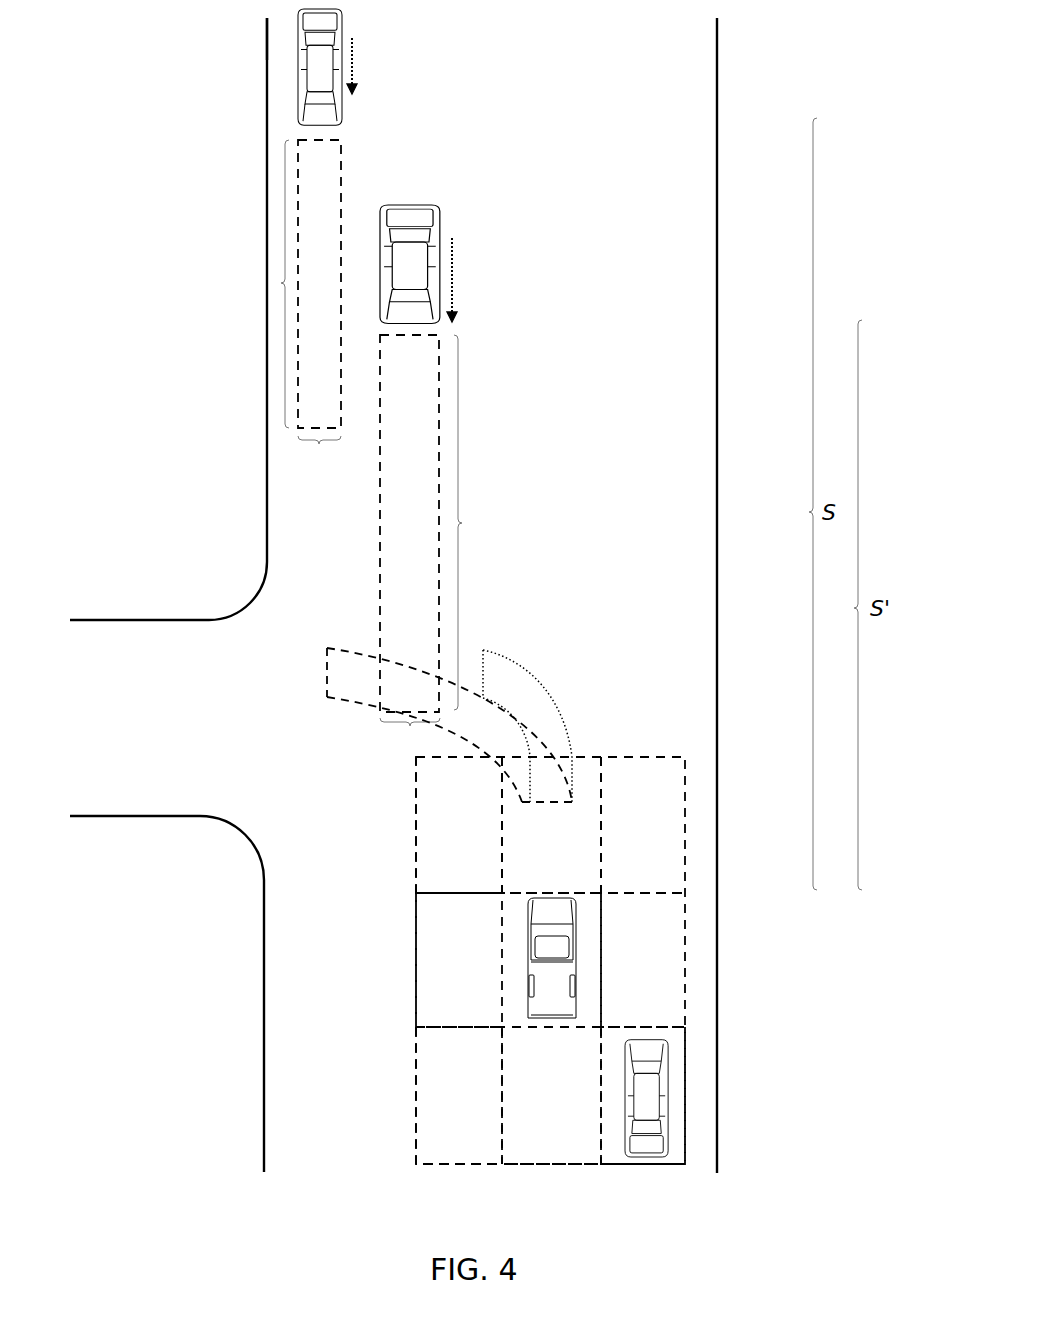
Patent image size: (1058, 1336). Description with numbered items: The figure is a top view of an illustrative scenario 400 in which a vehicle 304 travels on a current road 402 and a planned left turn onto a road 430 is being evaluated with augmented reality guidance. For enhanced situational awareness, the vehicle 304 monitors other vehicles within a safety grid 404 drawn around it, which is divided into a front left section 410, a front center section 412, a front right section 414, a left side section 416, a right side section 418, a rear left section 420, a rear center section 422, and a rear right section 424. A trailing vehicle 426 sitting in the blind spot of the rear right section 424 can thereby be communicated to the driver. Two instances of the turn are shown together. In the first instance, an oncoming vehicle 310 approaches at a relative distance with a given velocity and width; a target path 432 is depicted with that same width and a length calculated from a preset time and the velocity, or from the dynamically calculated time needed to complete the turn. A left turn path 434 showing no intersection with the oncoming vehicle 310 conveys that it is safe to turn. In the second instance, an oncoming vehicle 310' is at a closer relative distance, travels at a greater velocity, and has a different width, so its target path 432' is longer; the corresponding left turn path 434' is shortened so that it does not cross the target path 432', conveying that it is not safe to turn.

The illustrative scenario 400 is at (768, 34).
The current road 402 is at (393, 595).
The road 430 is at (167, 933).
The oncoming vehicle 310 is at (282, 67).
The oncoming vehicle 310' is at (415, 246).
The target path 432 is at (264, 308).
The target path 432' is at (349, 545).
The left turn path 434 is at (390, 725).
The left turn path 434' is at (635, 701).
The safety grid 404 is at (684, 757).
The front left section 410 is at (459, 825).
The front center section 412 is at (551, 825).
The front right section 414 is at (643, 825).
The left side section 416 is at (459, 960).
The right side section 418 is at (643, 960).
The rear left section 420 is at (459, 1095).
The rear center section 422 is at (551, 1095).
The vehicle 304 is at (576, 934).
The rear right section 424 is at (671, 1046).
The trailing vehicle 426 is at (665, 1098).